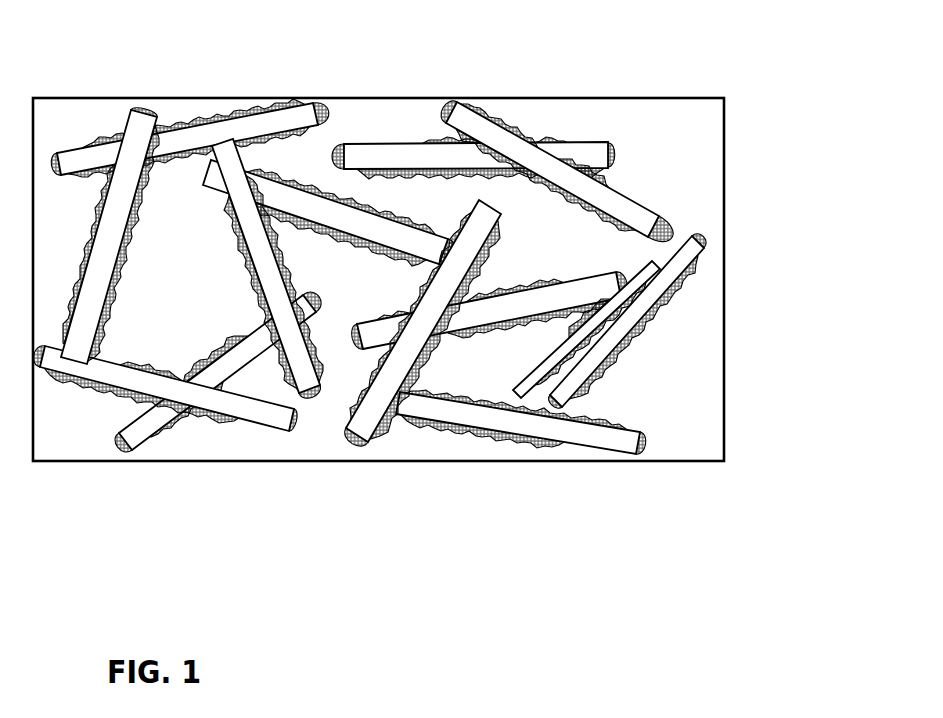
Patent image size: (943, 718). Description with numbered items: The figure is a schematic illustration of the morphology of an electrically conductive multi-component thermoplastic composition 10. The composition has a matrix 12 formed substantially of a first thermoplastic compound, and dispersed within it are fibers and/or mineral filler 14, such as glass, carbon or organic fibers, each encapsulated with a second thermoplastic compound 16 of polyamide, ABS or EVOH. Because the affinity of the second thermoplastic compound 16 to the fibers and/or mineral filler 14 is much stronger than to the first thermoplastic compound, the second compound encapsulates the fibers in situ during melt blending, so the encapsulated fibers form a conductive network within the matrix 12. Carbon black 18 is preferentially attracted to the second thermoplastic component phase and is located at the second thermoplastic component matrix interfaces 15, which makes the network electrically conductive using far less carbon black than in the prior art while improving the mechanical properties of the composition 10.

The electrically conductive multi-component thermoplastic composition 10 is at (465, 245).
The matrix 12 is at (678, 135).
The fibers and/or mineral filler 14 is at (686, 321).
The second thermoplastic compound 16 is at (655, 318).
The second thermoplastic component matrix interfaces 15 is at (648, 347).
The carbon black 18 is at (658, 383).